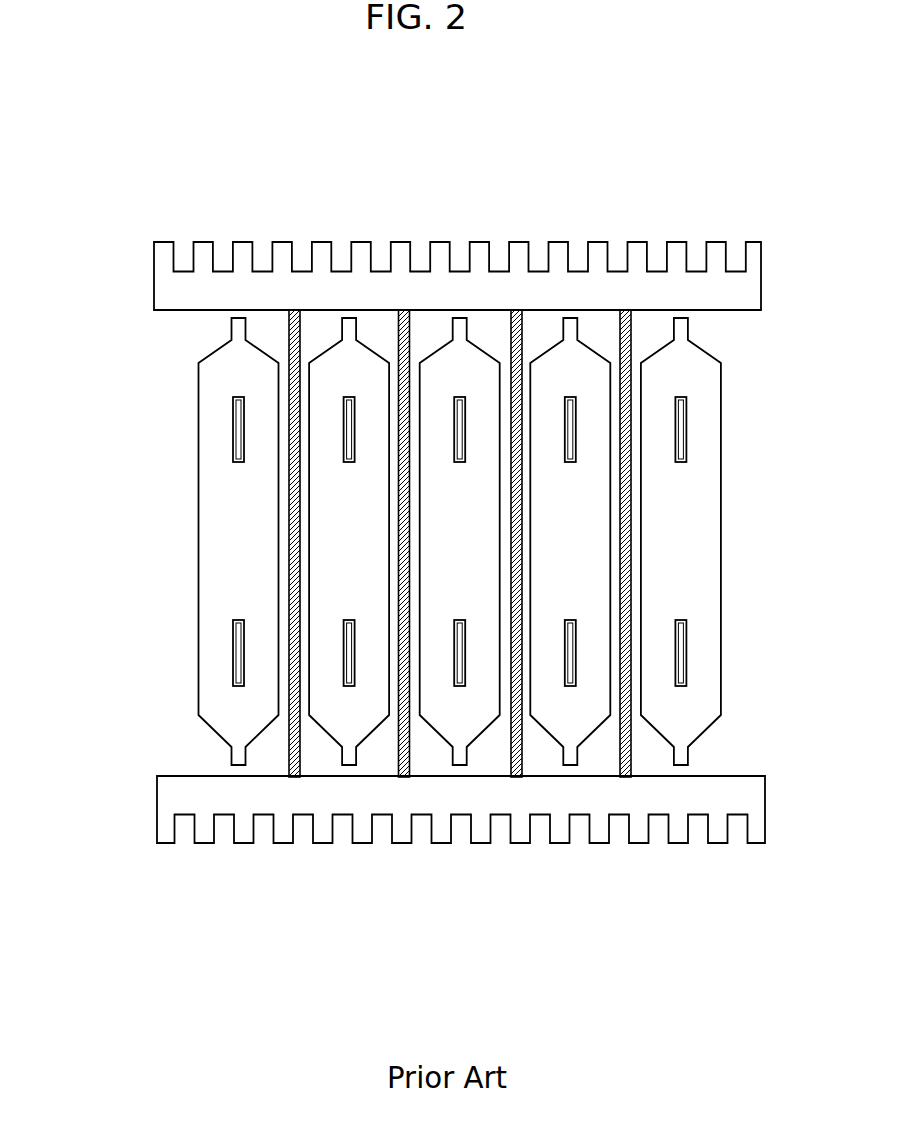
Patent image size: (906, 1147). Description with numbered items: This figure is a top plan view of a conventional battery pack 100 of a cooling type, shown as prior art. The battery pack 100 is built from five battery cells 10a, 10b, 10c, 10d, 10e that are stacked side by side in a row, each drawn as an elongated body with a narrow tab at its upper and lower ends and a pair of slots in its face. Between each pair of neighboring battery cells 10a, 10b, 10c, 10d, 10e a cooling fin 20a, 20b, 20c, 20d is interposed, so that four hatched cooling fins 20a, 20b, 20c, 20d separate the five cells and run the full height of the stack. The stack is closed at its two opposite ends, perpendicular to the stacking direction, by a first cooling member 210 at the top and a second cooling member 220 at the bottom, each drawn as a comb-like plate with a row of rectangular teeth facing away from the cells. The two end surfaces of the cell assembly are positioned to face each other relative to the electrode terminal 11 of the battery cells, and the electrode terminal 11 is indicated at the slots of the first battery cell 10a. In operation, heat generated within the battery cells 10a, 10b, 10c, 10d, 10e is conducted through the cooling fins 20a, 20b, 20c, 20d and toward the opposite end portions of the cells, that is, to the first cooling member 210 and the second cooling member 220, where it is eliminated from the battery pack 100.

The battery pack 100 is at (125, 213).
The first cooling member 210 is at (193, 295).
The second cooling member 220 is at (193, 786).
The battery cell 10a is at (250, 616).
The battery cell 10b is at (349, 723).
The battery cell 10c is at (462, 723).
The battery cell 10d is at (572, 723).
The battery cell 10e is at (682, 718).
The electrode terminal 11 is at (238, 444).
The cooling fin 20a is at (292, 313).
The cooling fin 20b is at (407, 312).
The cooling fin 20c is at (521, 312).
The cooling fin 20d is at (625, 312).